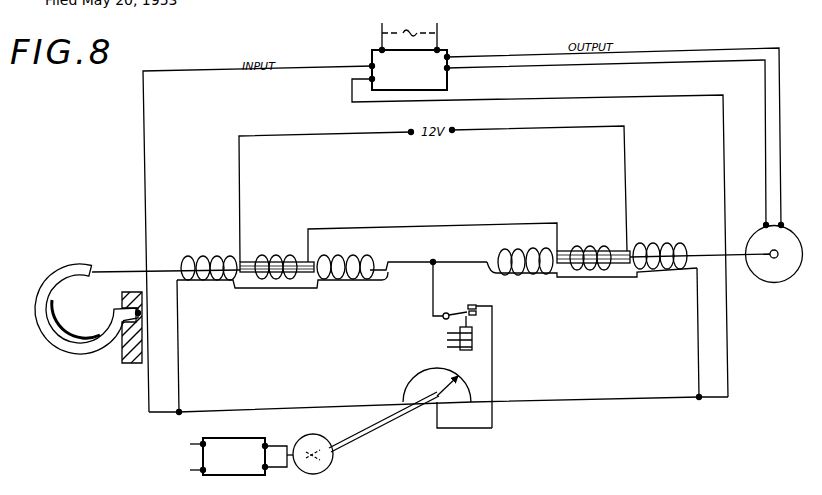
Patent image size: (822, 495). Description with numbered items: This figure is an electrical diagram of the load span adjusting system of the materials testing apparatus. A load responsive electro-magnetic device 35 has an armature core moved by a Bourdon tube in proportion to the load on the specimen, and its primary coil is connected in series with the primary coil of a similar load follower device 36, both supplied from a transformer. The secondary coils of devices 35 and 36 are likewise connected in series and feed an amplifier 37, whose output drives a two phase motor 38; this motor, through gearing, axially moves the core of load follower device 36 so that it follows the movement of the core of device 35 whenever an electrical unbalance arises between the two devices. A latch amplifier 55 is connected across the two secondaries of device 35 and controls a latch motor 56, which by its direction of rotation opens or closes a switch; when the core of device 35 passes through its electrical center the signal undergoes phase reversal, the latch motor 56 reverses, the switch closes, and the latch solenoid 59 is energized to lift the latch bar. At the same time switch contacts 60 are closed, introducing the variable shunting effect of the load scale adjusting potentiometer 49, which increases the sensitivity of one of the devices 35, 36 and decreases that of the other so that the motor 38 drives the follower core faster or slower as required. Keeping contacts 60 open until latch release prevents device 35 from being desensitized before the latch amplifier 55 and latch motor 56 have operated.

The electro-magnetic type device 35 is at (278, 250).
The load follower device 36 is at (584, 248).
The amplifier 37 is at (449, 53).
The two phase motor 38 is at (765, 283).
The load scale adjusting potentiometer 49 is at (470, 382).
The latch amplifier 55 is at (203, 456).
The latch motor 56 is at (334, 462).
The latch solenoid 59 is at (474, 338).
The switch contacts 60 is at (468, 307).